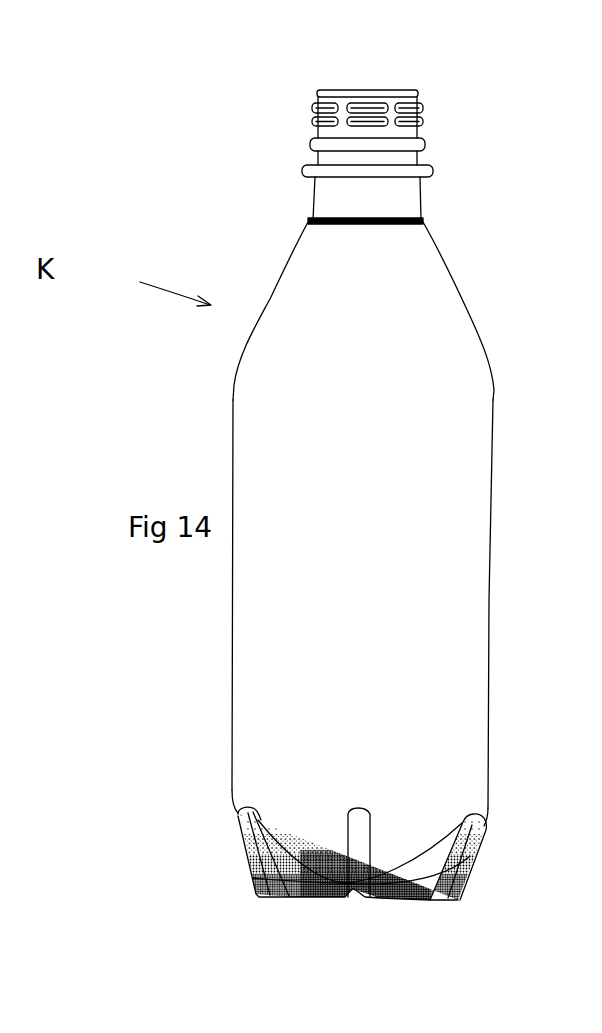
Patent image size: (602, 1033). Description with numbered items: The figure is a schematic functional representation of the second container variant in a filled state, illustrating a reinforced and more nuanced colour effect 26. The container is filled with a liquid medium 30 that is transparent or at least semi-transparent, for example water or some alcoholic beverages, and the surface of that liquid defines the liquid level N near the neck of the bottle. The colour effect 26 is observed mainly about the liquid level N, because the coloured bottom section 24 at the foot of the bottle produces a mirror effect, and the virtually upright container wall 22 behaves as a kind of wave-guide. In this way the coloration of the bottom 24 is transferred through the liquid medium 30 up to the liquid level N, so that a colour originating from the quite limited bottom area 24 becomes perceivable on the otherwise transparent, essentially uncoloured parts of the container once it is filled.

The liquid level N is at (415, 215).
The liquid medium 30 is at (298, 263).
The container wall 22 is at (490, 658).
The bottom section 24 is at (253, 879).
The colour effect 26 is at (433, 818).